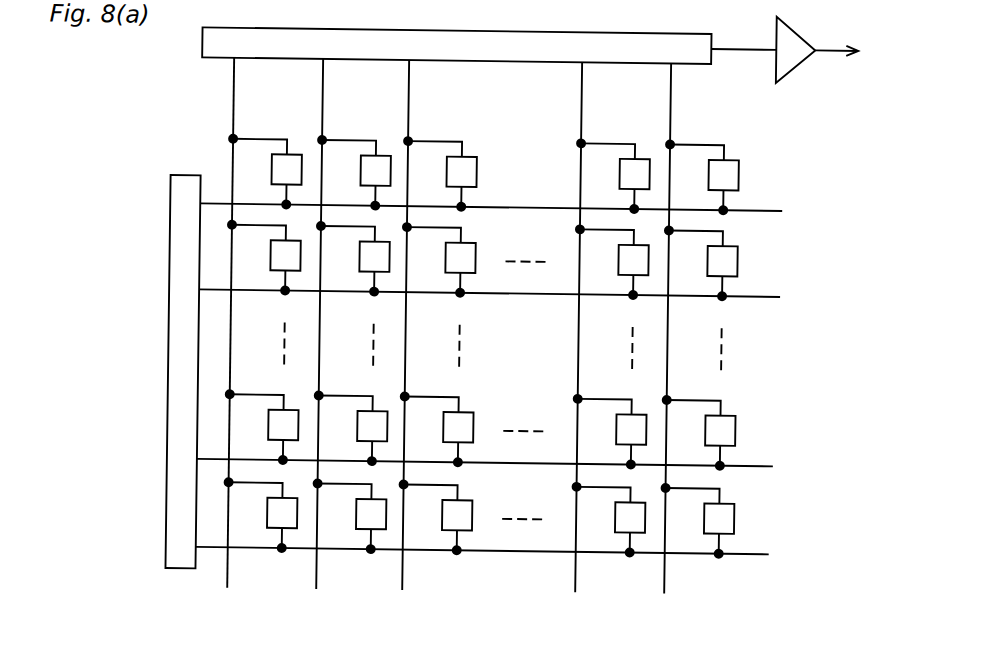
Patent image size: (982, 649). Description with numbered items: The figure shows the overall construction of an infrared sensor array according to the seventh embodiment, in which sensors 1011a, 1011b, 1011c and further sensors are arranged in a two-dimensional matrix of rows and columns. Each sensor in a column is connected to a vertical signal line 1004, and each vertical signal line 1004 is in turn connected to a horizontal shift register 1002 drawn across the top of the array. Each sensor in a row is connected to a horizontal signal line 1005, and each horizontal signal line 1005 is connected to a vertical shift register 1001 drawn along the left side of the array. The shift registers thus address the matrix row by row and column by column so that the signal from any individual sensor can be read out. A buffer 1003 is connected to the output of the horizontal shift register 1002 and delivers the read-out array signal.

The vertical shift register 1001 is at (198, 183).
The horizontal shift register 1002 is at (687, 58).
The buffer 1003 is at (785, 67).
The vertical signal line 1004 is at (231, 125).
The horizontal signal line 1005 is at (747, 548).
The sensor 1011a is at (261, 535).
The sensor 1011b is at (352, 534).
The sensor 1011c is at (440, 533).